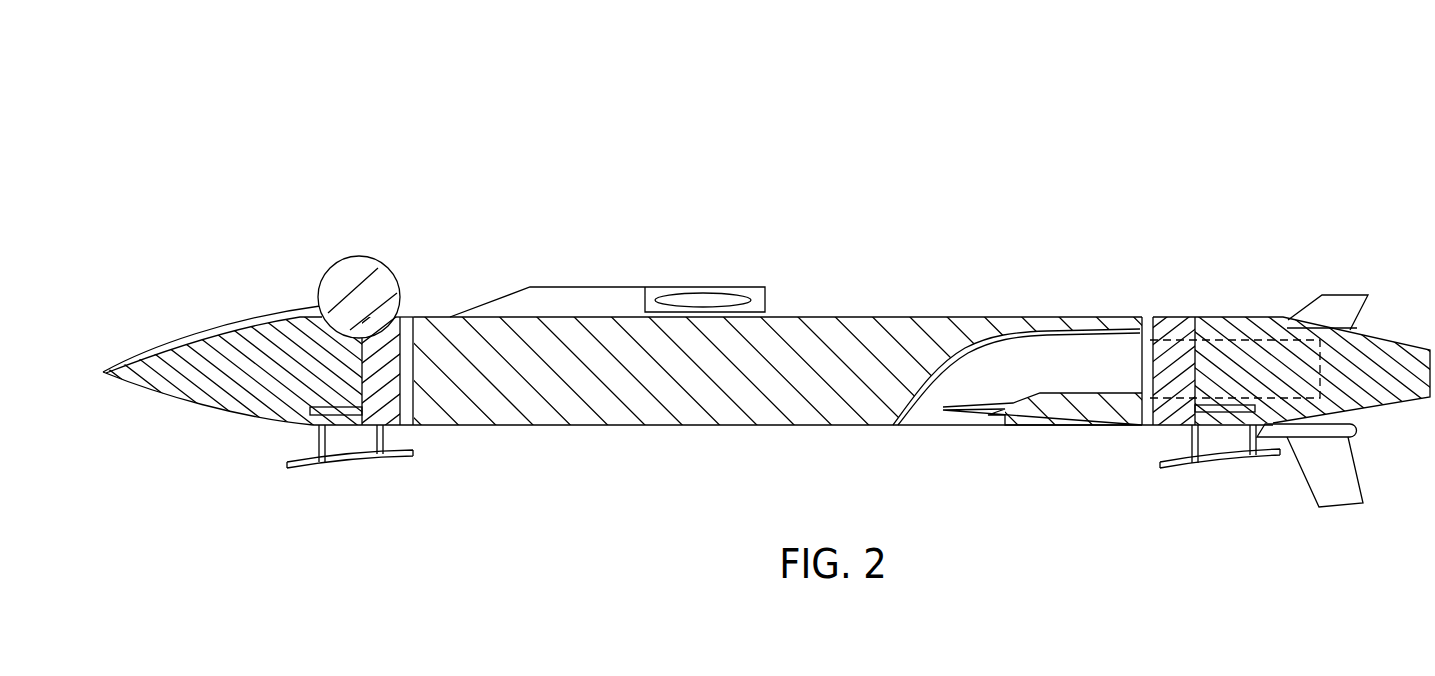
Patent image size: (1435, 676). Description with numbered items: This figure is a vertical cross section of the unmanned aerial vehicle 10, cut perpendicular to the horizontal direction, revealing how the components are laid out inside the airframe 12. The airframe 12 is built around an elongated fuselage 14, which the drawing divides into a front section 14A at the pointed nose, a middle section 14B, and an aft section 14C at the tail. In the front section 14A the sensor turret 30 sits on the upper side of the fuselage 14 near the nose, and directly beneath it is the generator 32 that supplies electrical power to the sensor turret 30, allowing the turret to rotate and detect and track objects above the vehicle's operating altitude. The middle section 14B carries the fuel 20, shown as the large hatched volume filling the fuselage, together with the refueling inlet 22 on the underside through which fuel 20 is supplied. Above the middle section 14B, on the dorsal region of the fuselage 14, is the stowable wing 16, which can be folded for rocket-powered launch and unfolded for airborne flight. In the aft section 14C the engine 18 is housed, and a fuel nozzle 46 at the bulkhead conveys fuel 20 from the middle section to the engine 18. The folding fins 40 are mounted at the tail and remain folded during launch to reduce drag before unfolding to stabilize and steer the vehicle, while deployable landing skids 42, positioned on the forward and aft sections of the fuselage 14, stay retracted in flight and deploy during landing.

The unmanned aerial vehicle 10 is at (263, 125).
The airframe 12 is at (455, 187).
The fuselage 14 is at (1050, 258).
The nose portion 14A is at (250, 315).
The mid-body portion 14B is at (943, 316).
The tail portion 14C is at (1393, 342).
The stowable wing 16 is at (631, 290).
The engine 18 is at (1246, 343).
The fuel 20 is at (590, 394).
The refueling inlet 22 is at (934, 415).
The sensor turret 30 is at (344, 274).
The generator 32 is at (280, 394).
The folding fins 40 is at (1297, 432).
The deployable landing skids 42 is at (343, 403).
The fuel nozzle 46 is at (1196, 362).